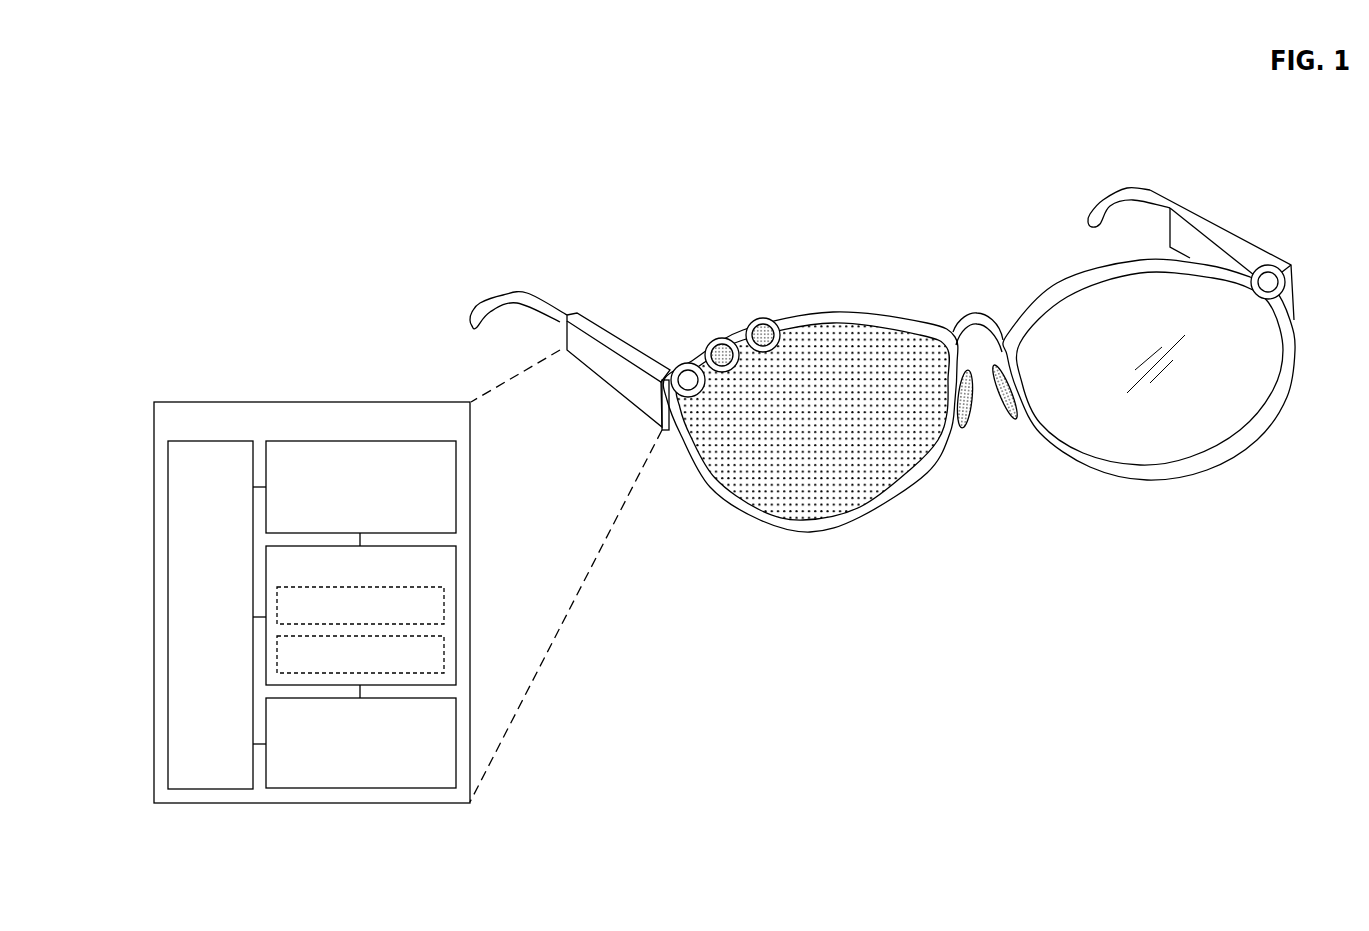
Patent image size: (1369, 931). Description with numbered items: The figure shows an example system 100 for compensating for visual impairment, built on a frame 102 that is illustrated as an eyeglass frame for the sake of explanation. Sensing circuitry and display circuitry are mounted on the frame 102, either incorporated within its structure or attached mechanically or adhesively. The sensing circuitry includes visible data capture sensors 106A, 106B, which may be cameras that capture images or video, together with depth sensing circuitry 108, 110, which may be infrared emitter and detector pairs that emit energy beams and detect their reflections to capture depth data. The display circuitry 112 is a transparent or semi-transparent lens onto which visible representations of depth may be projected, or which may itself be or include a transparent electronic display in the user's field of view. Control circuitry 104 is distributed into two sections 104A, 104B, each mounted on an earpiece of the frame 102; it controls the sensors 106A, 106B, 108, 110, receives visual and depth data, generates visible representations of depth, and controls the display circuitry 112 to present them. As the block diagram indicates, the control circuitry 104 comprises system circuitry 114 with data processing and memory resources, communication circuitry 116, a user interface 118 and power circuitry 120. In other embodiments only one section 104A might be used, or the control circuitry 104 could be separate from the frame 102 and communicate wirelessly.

The system 100 is at (265, 145).
The frame 102 is at (971, 403).
The control circuitry 104 is at (330, 431).
The control circuitry section 104A is at (605, 382).
The control circuitry section 104B is at (1210, 213).
The visible data capture sensor 106A is at (678, 362).
The visible data capture sensor 106B is at (1331, 226).
The depth sensing circuitry 108 is at (722, 338).
The depth sensing circuitry 110 is at (767, 318).
The display circuitry 112 is at (933, 468).
The system circuitry 114 is at (446, 577).
The communication circuitry 116 is at (346, 524).
The user interface 118 is at (346, 782).
The power circuitry 120 is at (196, 652).